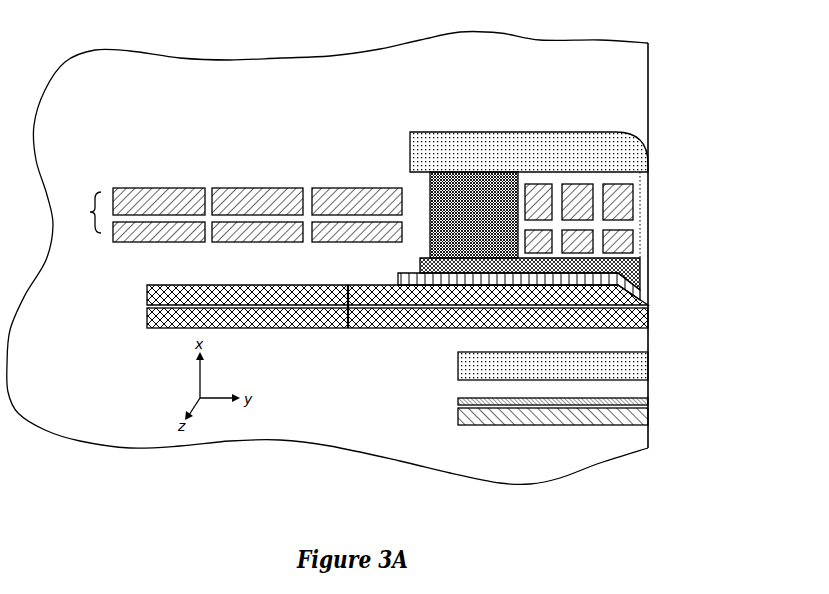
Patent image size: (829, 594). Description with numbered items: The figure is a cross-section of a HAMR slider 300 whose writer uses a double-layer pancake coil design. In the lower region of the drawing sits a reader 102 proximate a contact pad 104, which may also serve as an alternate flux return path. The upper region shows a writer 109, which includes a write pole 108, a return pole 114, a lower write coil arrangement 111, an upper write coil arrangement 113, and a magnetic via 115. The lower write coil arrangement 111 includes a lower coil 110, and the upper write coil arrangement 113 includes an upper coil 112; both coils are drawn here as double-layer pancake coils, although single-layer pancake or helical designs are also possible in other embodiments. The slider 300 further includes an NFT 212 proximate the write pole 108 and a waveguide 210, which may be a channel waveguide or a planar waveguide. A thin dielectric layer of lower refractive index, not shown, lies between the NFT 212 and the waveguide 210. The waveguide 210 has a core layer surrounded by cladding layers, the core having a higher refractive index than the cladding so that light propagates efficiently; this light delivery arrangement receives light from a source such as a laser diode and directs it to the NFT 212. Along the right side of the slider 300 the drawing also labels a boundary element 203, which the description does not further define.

The HAMR slider 300 is at (684, 69).
The encapsulation / cover layer 203 is at (648, 108).
The return pole 114 is at (636, 160).
The magnetic via 115 is at (467, 172).
The upper write coil arrangement 113 is at (247, 186).
The upper coil 112 is at (326, 188).
The writer 109 is at (92, 212).
The lower coil 110 is at (381, 243).
The write pole 108 is at (648, 272).
The NFT 212 is at (648, 295).
The waveguide 210 is at (336, 307).
The lower write coil arrangement 111 is at (282, 278).
The contact pad 104 is at (638, 368).
The reader 102 is at (648, 417).